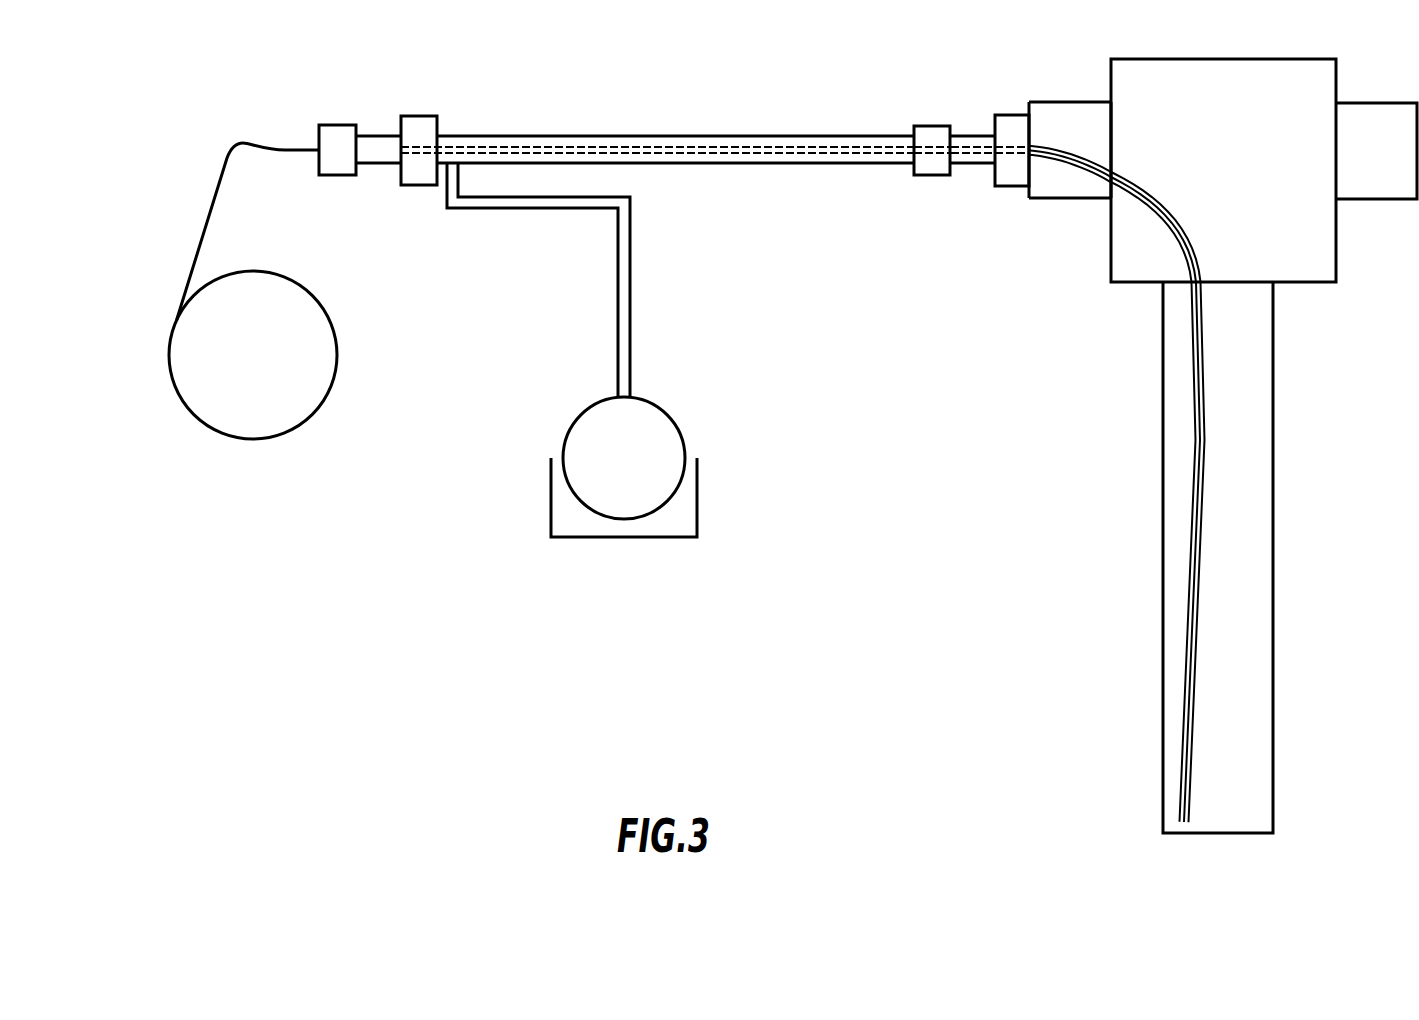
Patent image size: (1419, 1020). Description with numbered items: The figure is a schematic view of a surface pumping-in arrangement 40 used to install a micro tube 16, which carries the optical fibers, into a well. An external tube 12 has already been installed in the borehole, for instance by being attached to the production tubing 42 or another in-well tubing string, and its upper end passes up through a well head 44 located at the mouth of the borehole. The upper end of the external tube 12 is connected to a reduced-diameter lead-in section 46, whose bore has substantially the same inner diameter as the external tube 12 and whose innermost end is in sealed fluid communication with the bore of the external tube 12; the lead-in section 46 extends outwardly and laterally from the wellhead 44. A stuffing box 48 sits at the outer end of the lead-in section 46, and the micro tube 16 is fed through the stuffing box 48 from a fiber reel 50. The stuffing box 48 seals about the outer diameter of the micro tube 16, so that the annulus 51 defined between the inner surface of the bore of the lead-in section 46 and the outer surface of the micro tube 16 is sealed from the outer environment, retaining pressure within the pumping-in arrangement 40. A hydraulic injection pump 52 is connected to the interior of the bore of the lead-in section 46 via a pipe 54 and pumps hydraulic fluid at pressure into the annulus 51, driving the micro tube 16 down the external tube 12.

The external tube 12 is at (1202, 590).
The micro tube 16 is at (1186, 488).
The pumping-in arrangement 40 is at (592, 100).
The production tubing 42 is at (1276, 660).
The well head 44 is at (1054, 98).
The lead-in section 46 is at (811, 168).
The stuffing box 48 is at (380, 174).
The fiber reel 50 is at (240, 442).
The annulus 51 is at (668, 155).
The hydraulic injection pump 52 is at (599, 526).
The pipe 54 is at (631, 345).